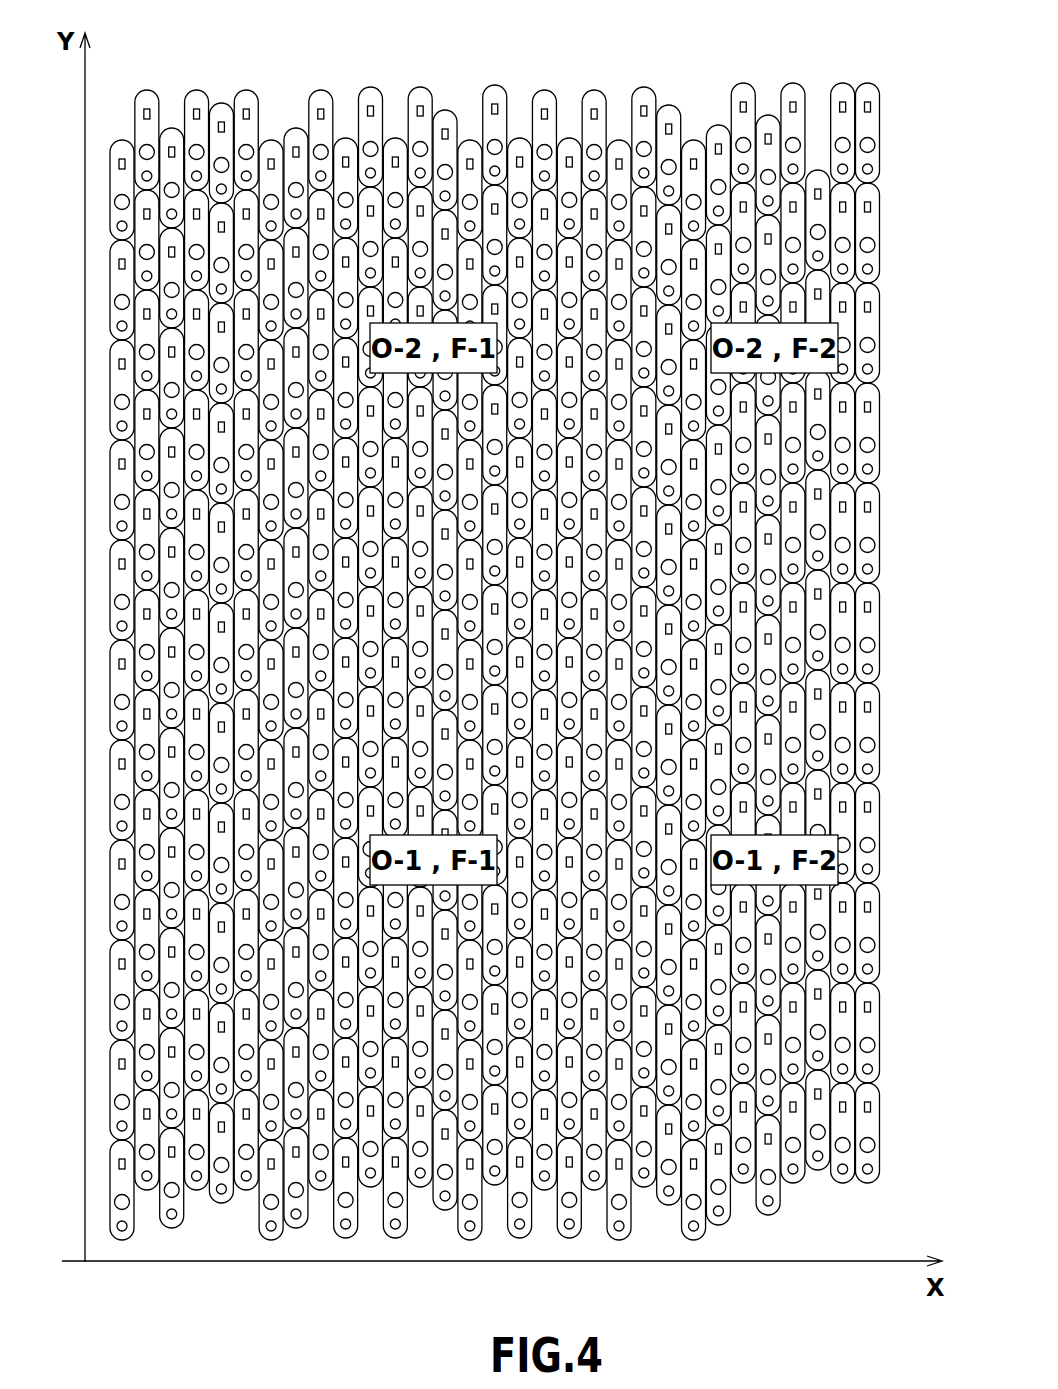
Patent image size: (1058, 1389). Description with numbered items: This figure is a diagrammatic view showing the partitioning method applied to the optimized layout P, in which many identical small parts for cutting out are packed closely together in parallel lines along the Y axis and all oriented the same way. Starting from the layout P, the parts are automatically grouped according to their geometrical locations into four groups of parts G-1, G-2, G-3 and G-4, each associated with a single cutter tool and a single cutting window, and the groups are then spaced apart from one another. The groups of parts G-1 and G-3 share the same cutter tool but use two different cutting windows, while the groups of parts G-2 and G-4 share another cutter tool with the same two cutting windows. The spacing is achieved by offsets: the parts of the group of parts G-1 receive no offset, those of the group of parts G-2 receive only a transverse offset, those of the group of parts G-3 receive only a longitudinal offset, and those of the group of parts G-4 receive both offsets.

The layout P is at (498, 663).
The group of parts G-1 is at (345, 1168).
The group of parts G-2 is at (345, 158).
The group of parts G-3 is at (762, 1168).
The group of parts G-4 is at (766, 158).